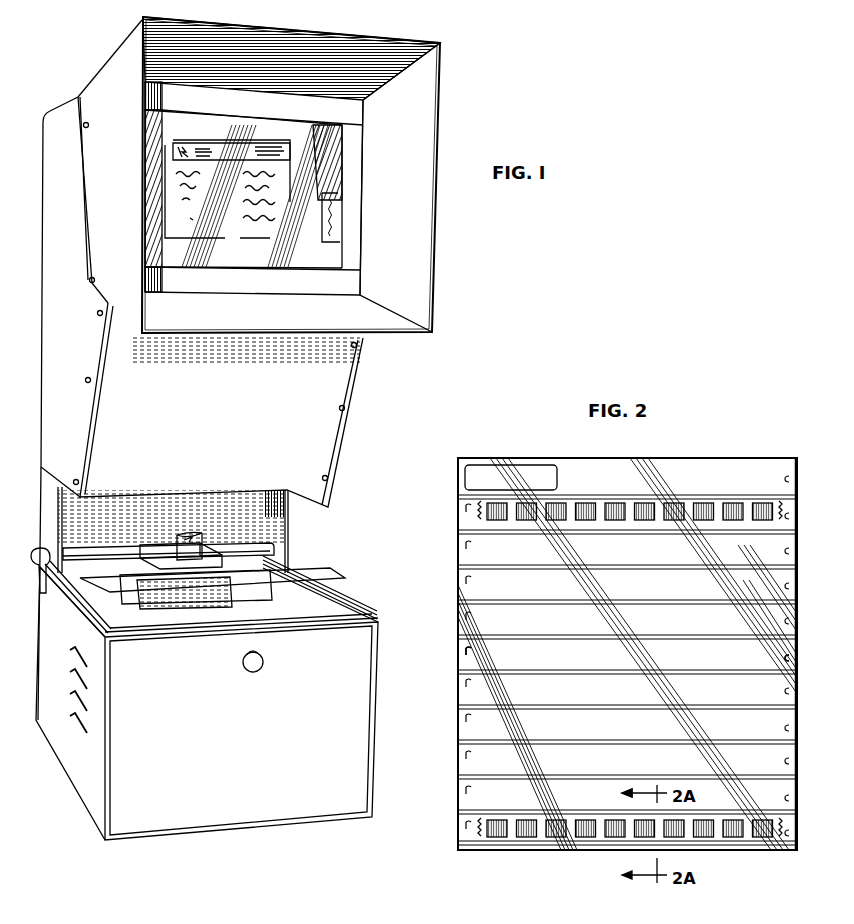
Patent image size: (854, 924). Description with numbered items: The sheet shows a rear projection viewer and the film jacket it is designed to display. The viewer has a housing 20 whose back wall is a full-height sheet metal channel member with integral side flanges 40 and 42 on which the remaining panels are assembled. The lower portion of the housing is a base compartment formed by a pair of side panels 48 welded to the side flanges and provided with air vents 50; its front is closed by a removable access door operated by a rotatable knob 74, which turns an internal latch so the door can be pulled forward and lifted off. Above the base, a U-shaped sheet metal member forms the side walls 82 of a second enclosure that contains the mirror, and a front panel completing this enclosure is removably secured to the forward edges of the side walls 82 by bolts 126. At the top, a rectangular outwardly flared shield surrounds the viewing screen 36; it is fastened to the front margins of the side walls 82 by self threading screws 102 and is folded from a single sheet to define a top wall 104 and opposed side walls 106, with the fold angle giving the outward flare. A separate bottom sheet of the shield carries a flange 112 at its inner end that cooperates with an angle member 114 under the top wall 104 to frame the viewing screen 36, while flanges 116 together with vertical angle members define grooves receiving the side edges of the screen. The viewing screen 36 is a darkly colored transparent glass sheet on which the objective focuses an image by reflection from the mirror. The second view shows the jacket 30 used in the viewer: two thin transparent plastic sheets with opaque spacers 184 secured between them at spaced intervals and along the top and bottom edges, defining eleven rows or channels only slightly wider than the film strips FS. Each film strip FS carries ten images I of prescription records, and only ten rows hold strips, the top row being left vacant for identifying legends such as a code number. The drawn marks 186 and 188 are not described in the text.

In FIG. 1, the housing 20 is at (332, 583).
In FIG. 2, the jacket 30 is at (455, 793).
In FIG. 1, the viewing screen 36 is at (316, 259).
In FIG. 1, the side flange 40 is at (280, 530).
In FIG. 1, the side flange 42 is at (42, 517).
In FIG. 1, the side panel 48 is at (80, 788).
In FIG. 1, the air vent 50 is at (72, 717).
In FIG. 1, the rotatable knob 74 is at (263, 665).
In FIG. 1, the side wall 82 is at (45, 238).
In FIG. 1, the self threading screw 102 is at (78, 97).
In FIG. 1, the top wall 104 is at (402, 48).
In FIG. 1, the side wall 106 is at (113, 67).
In FIG. 1, the flange 112 is at (252, 285).
In FIG. 1, the angle member 114 is at (360, 115).
In FIG. 1, the flange 116 is at (357, 198).
In FIG. 1, the bolt 126 is at (348, 408).
In FIG. 2, the spacer 184 is at (693, 460).
In FIG. 2, the index mark 186 is at (467, 650).
In FIG. 2, the tab 188 is at (787, 657).
In FIG. 2, the image I is at (592, 508).
In FIG. 2, the film strip FS is at (740, 508).